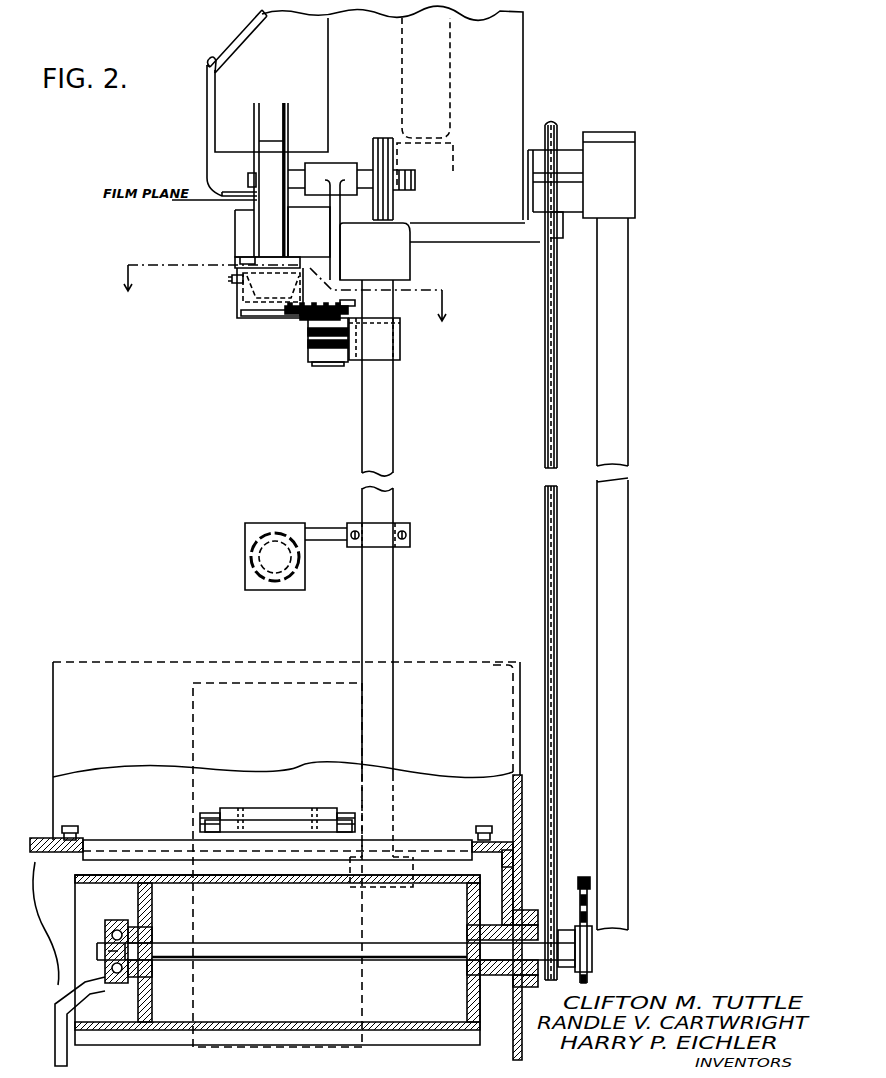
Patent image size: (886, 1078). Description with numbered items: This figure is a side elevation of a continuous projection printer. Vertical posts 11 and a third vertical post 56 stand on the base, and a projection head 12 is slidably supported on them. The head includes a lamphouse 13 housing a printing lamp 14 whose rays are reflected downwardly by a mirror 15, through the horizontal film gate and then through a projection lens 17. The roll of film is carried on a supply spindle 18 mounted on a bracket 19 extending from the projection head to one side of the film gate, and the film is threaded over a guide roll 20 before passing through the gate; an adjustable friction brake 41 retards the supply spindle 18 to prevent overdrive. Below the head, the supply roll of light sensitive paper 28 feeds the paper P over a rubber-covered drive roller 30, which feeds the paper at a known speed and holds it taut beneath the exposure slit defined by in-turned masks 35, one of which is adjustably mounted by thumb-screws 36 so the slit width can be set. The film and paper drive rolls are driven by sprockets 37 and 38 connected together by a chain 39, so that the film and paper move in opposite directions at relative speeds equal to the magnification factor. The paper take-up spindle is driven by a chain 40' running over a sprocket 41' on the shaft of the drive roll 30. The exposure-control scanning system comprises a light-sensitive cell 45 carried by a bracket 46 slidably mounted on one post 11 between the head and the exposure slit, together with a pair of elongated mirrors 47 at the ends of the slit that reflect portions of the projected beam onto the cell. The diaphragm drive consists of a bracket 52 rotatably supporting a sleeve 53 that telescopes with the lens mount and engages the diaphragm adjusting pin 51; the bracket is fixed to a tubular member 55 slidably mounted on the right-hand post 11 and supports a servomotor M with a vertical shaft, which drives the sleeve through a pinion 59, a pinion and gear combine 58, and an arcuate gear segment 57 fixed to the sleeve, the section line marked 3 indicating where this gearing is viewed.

The vertical posts 11 is at (385, 441).
The projection head 12 is at (222, 107).
The lamphouse 13 is at (527, 90).
The printing lamp 14 is at (448, 74).
The mirror 15 is at (248, 36).
The projection lens 17 is at (248, 263).
The supply spindle 18 is at (247, 179).
The bracket 19 is at (333, 231).
The guide roll 20 is at (264, 232).
The supply roll of light sensitive paper 28 is at (285, 861).
The drive roller 30 is at (232, 884).
The in-turned masks 35 is at (137, 849).
The adjustable thumb-screws 36 is at (96, 829).
The sprocket 37 is at (545, 306).
The sprocket 38 is at (551, 982).
The chain 39 is at (545, 575).
The chain 40' is at (583, 915).
The adjustable friction brake 41 is at (401, 179).
The sprocket 41' is at (610, 956).
The light-sensitive cell 45 is at (245, 553).
The bracket 46 is at (357, 522).
The elongated mirrors 47 is at (204, 816).
The diaphragm adjusting pin 51 is at (231, 285).
The bracket 52 is at (247, 320).
The sleeve 53 is at (240, 286).
The tubular member 55 is at (400, 340).
The third vertical post 56 is at (619, 545).
The arcuate gear segment 57 is at (297, 311).
The pinion and gear combine 58 is at (355, 303).
The pinion 59 is at (314, 316).
The servomotor M is at (313, 356).
The paper P is at (299, 874).
The section line 3- 3 is at (285, 305).